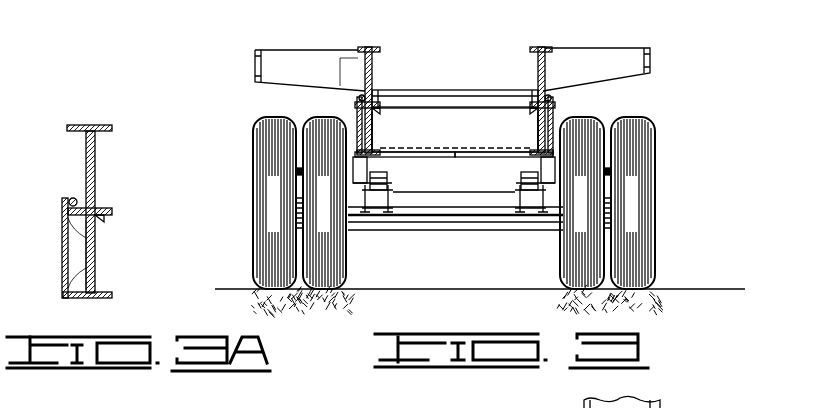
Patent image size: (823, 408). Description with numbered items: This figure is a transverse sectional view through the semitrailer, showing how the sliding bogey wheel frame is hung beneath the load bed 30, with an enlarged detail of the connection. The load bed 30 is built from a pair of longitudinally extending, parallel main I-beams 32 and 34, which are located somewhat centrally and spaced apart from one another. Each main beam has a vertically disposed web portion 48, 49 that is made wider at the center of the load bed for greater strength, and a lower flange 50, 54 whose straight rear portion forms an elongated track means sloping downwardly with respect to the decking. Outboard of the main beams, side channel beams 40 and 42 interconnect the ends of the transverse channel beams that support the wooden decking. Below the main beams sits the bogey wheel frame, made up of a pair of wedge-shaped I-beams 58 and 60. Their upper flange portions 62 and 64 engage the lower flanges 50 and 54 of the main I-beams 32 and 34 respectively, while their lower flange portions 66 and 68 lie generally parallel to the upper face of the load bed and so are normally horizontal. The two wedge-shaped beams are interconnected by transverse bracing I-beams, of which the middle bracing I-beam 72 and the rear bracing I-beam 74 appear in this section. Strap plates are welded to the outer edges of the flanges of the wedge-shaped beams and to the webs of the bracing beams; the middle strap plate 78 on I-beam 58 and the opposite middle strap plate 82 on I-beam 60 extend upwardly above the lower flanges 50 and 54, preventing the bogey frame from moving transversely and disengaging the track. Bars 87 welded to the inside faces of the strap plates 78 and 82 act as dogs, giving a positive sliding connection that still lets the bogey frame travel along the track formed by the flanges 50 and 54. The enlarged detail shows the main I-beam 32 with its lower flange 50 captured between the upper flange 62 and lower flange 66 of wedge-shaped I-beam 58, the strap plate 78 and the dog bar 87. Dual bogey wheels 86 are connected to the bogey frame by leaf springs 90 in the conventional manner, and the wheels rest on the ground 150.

In FIG. 3, the load bed 30 is at (472, 48).
In FIG. 3, the I-beam 32 is at (374, 73).
In FIG. 3A, the I-beam 32 is at (96, 158).
In FIG. 3, the I-beam 34 is at (536, 66).
In FIG. 3, the side channel beam 40 is at (255, 70).
In FIG. 3, the side channel beam 42 is at (652, 62).
In FIG. 3, the web portion 48 is at (358, 54).
In FIG. 3, the web portion 49 is at (546, 54).
In FIG. 3, the lower flange 50 is at (356, 104).
In FIG. 3A, the lower flange 50 is at (100, 208).
In FIG. 3, the lower flange 54 is at (553, 105).
In FIG. 3, the I-beam 58 is at (380, 139).
In FIG. 3A, the I-beam 58 is at (97, 253).
In FIG. 3, the I-beam 60 is at (530, 136).
In FIG. 3, the upper flange portion 62 is at (380, 110).
In FIG. 3A, the upper flange portion 62 is at (105, 218).
In FIG. 3, the upper flange portion 64 is at (530, 110).
In FIG. 3, the lower flange portion 66 is at (378, 158).
In FIG. 3A, the lower flange portion 66 is at (105, 294).
In FIG. 3, the lower flange portion 68 is at (532, 158).
In FIG. 3, the transverse bracing I-beam 72 is at (446, 148).
In FIG. 3, the transverse bracing I-beam 74 is at (462, 100).
In FIG. 3, the strap plate 78 is at (356, 118).
In FIG. 3A, the strap plate 78 is at (63, 262).
In FIG. 3, the strap plate 82 is at (554, 118).
In FIG. 3, the bogey wheels 86 is at (262, 238).
In FIG. 3, the bar 87 is at (362, 95).
In FIG. 3A, the bar 87 is at (72, 198).
In FIG. 3, the leaf spring 90 is at (393, 190).
In FIG. 3, the ground 150 is at (724, 288).